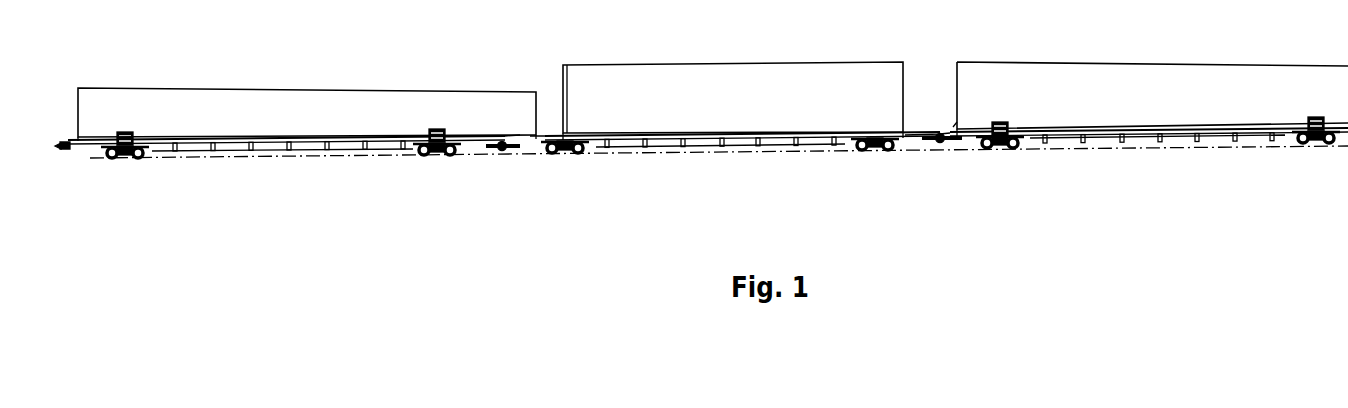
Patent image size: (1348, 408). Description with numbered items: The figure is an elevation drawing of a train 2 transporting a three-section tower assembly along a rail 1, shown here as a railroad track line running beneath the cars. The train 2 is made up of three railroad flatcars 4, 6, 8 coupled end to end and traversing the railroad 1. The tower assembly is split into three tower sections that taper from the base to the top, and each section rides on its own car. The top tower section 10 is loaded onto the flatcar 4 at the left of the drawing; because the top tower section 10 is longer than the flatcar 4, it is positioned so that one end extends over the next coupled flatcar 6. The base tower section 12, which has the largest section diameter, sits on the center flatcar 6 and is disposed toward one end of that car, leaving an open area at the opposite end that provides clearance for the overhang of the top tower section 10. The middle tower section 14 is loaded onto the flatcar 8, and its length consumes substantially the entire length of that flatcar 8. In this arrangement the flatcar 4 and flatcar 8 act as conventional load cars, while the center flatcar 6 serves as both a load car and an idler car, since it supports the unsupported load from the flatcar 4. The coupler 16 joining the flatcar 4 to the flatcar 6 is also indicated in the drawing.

The rail 1 is at (738, 152).
The train 2 is at (462, 265).
The flatcar 4 is at (298, 157).
The flatcar 6 is at (710, 149).
The flatcar 8 is at (1137, 145).
The top tower section 10 is at (313, 88).
The base tower section 12 is at (715, 62).
The middle tower section 14 is at (1131, 62).
The coupler 16 is at (502, 150).